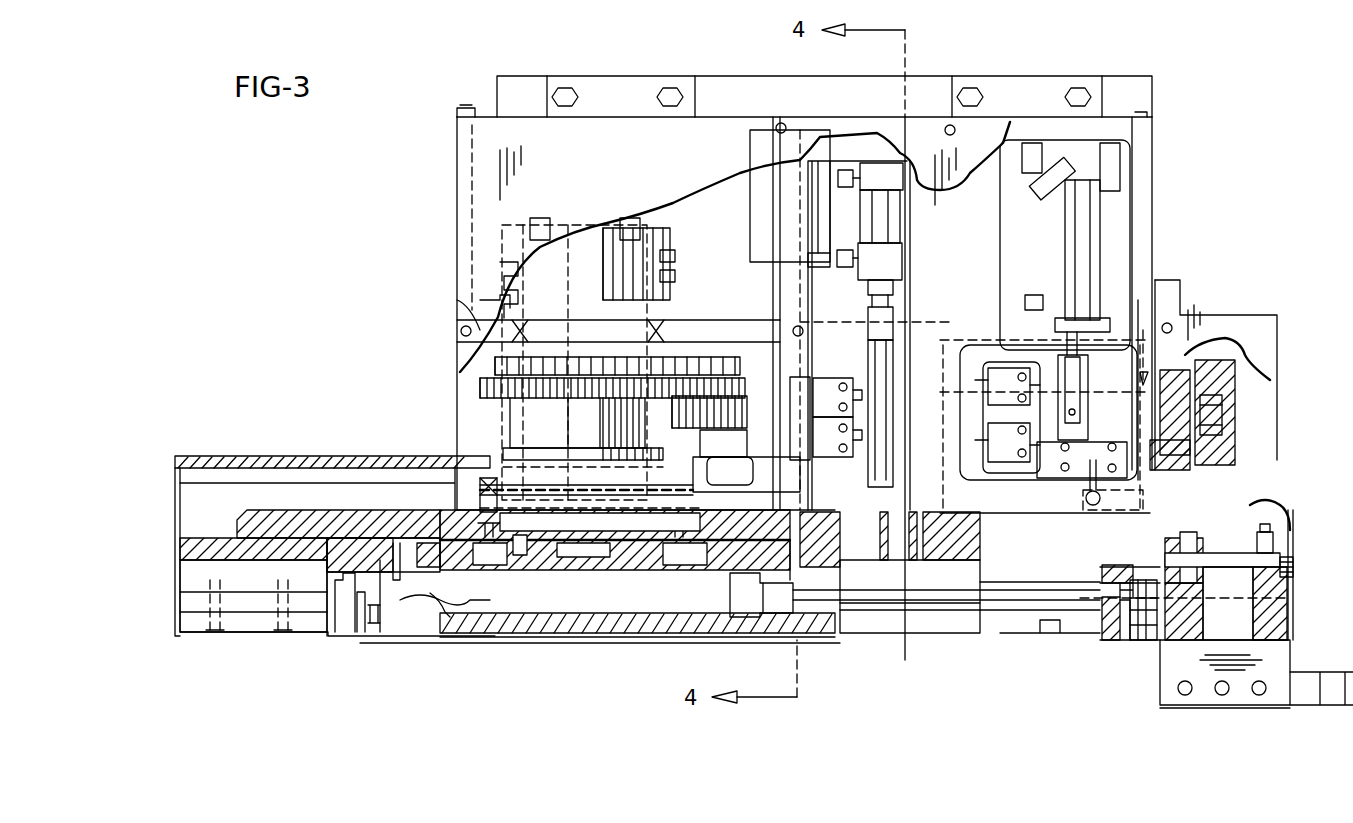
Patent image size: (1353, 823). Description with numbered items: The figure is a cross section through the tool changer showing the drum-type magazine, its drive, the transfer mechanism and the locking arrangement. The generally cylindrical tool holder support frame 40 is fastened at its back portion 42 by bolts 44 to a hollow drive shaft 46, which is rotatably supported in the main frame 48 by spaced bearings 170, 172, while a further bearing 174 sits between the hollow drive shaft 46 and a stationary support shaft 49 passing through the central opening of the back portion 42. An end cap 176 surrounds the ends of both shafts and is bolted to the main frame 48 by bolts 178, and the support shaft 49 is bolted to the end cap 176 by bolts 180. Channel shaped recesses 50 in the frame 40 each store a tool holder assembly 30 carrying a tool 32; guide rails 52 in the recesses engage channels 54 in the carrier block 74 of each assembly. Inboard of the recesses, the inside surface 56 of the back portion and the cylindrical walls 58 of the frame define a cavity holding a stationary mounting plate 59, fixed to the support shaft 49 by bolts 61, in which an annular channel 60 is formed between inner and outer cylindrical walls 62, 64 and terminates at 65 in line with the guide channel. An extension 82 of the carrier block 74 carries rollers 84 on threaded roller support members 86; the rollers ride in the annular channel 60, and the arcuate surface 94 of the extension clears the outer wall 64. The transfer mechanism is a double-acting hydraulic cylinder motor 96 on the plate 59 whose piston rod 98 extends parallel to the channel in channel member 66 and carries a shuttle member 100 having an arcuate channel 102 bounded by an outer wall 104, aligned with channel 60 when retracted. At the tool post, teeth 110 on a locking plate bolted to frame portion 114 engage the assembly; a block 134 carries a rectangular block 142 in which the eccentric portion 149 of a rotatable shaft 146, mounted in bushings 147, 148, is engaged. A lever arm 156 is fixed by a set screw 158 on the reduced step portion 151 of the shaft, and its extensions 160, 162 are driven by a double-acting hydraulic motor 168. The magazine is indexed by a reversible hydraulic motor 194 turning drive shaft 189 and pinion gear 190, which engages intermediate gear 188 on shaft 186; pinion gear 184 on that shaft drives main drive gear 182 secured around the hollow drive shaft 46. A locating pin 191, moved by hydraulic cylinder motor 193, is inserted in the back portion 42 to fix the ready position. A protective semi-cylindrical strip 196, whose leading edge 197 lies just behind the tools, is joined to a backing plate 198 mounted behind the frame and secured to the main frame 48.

The tool holder assembly 30 is at (1170, 692).
The tool 32 is at (1296, 698).
The tool holder support frame 40 is at (327, 515).
The back portion 42 is at (446, 515).
The bolts 44 is at (510, 562).
The hollow drive shaft 46 is at (515, 412).
The main frame 48 is at (505, 418).
The stationary support shaft 49 is at (596, 548).
The channel shaped recesses 50 is at (228, 560).
The guide rails 52 is at (283, 600).
The channels 54 is at (1285, 595).
The inside surface 56 is at (390, 542).
The cylindrical walls 58 is at (330, 600).
The mounting plate 59 is at (457, 552).
The annular channel 60 is at (364, 600).
The bolts 61 is at (525, 552).
The inner cylindrical wall 62 is at (378, 626).
The outer cylindrical wall 64 is at (348, 590).
The channel termination 65 is at (815, 612).
The channel member 66 is at (938, 615).
The carrier block 74 is at (1278, 622).
The extension 82 is at (1140, 626).
The rollers 84 is at (1132, 570).
The roller support member 86 is at (1118, 624).
The surface 94 is at (1150, 632).
The hydraulic cylinder motor 96 is at (702, 598).
The piston rod 98 is at (916, 592).
The shuttle member 100 is at (1080, 624).
The arcuate channel 102 is at (1182, 600).
The outer wall 104 is at (1152, 560).
The teeth 110 is at (1293, 568).
The frame portion 114 is at (1292, 515).
The block 134 is at (1240, 386).
The rectangular block 142 is at (1212, 380).
The rotatable shaft 146 is at (1143, 330).
The bushing 147 is at (1000, 450).
The bushing 148 is at (1170, 395).
The eccentric portion 149 is at (1222, 432).
The reduced step portion 151 is at (1052, 455).
The lever arm 156 is at (1140, 320).
The set screw 158 is at (1150, 468).
The extension 160 is at (992, 370).
The extension 162 is at (1072, 355).
The hydraulic motor 168 is at (1082, 232).
The bearing 170 is at (500, 326).
The bearing 172 is at (492, 470).
The bearing 174 is at (500, 515).
The end cap 176 is at (668, 232).
The bolts 178 is at (495, 292).
The bolts 180 is at (632, 218).
The main drive gear 182 is at (495, 382).
The pinion gear 184 is at (736, 374).
The shaft 186 is at (746, 461).
The intermediate gear 188 is at (703, 425).
The drive shaft 189 is at (812, 285).
The pinion gear 190 is at (806, 402).
The locating pin 191 is at (886, 455).
The hydraulic cylinder motor 193 is at (857, 335).
The hydraulic motor 194 is at (756, 236).
The semi-cylindrical strip 196 is at (180, 634).
The leading edge 197 is at (180, 634).
The backing plate 198 is at (268, 456).